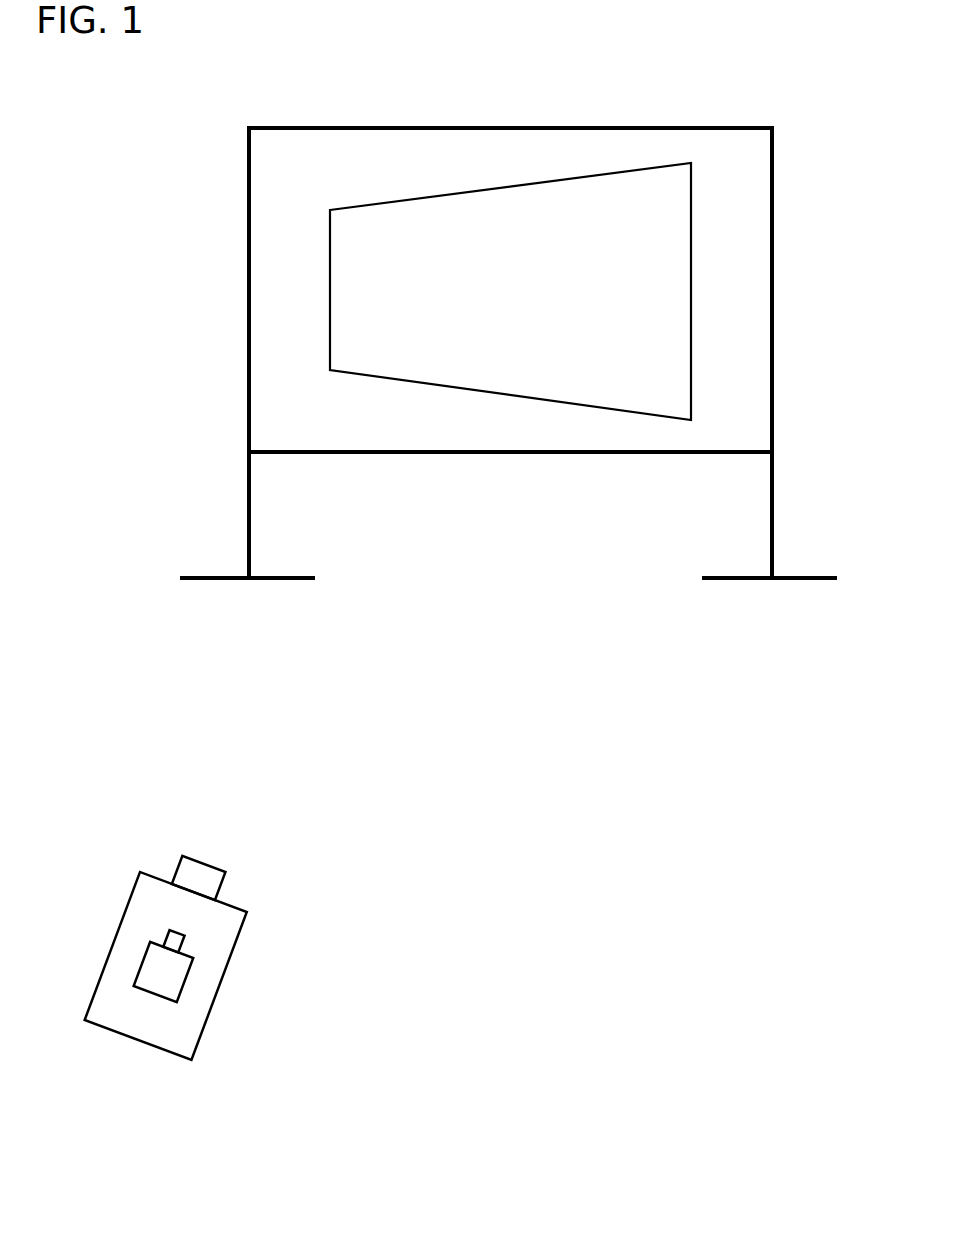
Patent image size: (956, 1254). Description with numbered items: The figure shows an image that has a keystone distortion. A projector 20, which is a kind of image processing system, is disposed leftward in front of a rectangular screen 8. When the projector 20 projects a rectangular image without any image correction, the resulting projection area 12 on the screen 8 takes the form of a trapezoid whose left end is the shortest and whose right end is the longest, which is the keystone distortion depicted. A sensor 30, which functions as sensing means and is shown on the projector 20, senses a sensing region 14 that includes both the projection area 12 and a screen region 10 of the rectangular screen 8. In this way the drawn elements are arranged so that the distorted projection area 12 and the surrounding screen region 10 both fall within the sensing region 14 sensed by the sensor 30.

The rectangular screen 8 is at (736, 98).
The screen region 10 is at (663, 127).
The projection area 12 is at (554, 178).
The sensing region 14 is at (821, 130).
The projector 20 is at (128, 900).
The sensor 30 is at (185, 982).